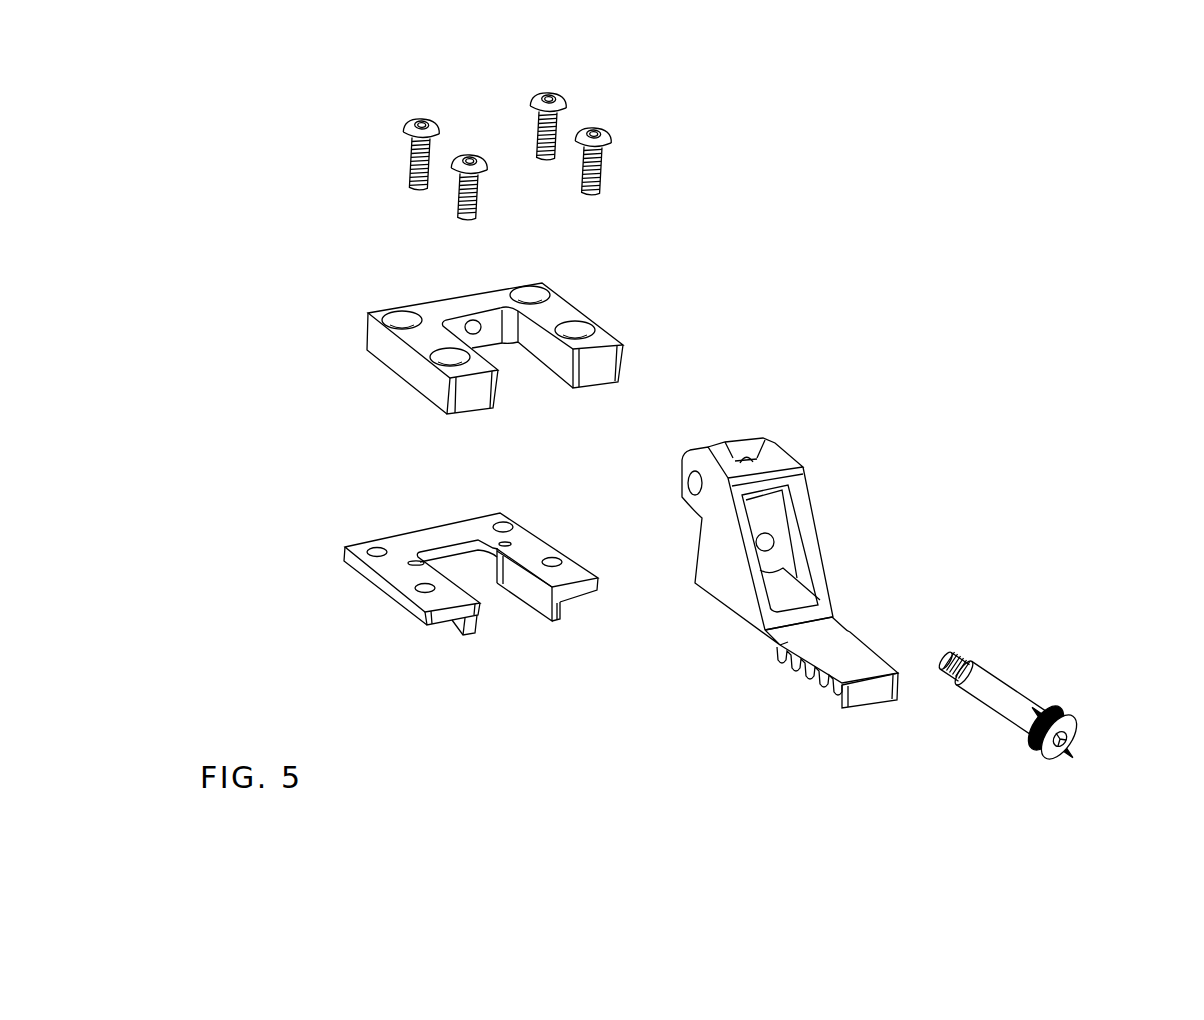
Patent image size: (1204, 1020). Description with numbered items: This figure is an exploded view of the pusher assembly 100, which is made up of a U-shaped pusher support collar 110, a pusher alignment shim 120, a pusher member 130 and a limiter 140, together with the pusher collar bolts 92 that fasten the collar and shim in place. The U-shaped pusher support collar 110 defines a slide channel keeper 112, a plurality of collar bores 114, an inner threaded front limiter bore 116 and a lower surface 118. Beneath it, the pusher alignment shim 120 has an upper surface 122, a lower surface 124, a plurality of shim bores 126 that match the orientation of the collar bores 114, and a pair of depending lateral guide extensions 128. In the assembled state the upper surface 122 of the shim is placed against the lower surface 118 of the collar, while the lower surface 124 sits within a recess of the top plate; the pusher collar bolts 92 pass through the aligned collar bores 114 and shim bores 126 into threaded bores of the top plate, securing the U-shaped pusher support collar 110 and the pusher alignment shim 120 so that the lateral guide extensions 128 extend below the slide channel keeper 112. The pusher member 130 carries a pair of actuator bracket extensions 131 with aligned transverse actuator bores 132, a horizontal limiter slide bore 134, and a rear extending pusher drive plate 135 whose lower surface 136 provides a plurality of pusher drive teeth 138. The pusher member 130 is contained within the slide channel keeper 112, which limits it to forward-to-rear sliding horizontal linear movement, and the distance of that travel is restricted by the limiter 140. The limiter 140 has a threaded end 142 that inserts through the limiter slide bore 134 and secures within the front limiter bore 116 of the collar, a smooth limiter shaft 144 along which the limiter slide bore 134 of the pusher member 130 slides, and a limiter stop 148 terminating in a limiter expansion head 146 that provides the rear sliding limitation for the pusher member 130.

The pusher collar bolts 92 is at (388, 120).
The pusher assembly 100 is at (843, 302).
The U-shaped pusher support collar 110 is at (521, 335).
The slide channel keeper 112 is at (555, 372).
The collar bores 114 is at (576, 330).
The front limiter bore 116 is at (508, 273).
The lower surface 118 is at (415, 400).
The pusher alignment shim 120 is at (445, 606).
The upper surface 122 is at (432, 534).
The lower surface 124 is at (443, 628).
The shim bores 126 is at (375, 550).
The lateral guide extensions 128 is at (535, 600).
The pusher member 130 is at (769, 602).
The actuator bracket extensions 131 is at (762, 446).
The actuator bores 132 is at (692, 482).
The limiter slide bore 134 is at (768, 542).
The pusher drive plate 135 is at (847, 686).
The lower surface 136 is at (873, 704).
The pusher drive teeth 138 is at (795, 678).
The limiter 140 is at (1059, 705).
The threaded end 142 is at (970, 653).
The limiter shaft 144 is at (995, 698).
The limiter expansion head 146 is at (1066, 754).
The limiter stop 148 is at (1065, 721).